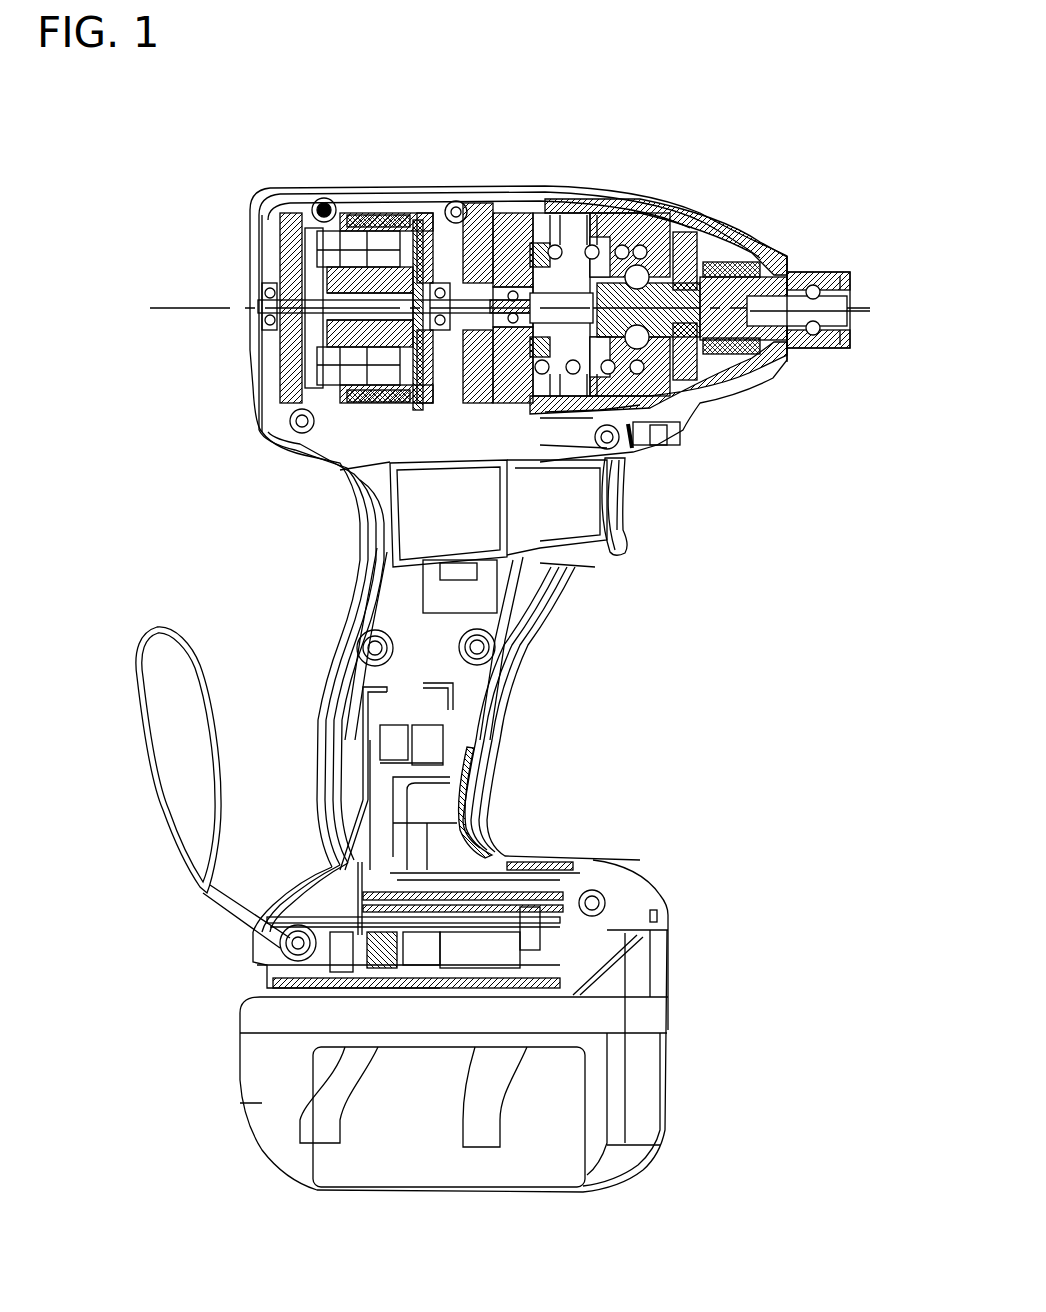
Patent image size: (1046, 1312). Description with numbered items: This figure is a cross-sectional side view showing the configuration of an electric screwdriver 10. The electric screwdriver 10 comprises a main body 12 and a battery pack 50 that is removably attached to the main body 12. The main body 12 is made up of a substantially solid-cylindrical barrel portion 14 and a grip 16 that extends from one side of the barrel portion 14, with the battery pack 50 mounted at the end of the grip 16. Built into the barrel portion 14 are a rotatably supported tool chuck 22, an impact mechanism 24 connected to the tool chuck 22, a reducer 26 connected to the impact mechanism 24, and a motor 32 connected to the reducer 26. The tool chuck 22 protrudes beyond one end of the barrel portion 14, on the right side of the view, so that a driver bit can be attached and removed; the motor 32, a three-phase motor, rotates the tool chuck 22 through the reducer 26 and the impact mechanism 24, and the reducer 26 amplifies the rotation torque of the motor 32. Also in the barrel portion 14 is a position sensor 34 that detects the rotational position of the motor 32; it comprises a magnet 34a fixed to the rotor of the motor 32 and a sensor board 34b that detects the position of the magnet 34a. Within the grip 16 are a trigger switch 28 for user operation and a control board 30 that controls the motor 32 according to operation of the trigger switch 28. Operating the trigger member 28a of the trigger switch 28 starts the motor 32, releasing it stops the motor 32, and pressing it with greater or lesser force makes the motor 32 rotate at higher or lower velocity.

The electric screwdriver 10 is at (735, 97).
The main body 12 is at (208, 240).
The barrel portion 14 is at (250, 333).
The grip 16 is at (330, 627).
The tool chuck 22 is at (858, 333).
The impact mechanism 24 is at (700, 403).
The reducer 26 is at (657, 445).
The trigger switch 28 is at (460, 523).
The trigger member 28a is at (628, 550).
The control board 30 is at (540, 862).
The motor 32 is at (335, 265).
The position sensor 34 is at (450, 118).
The magnet 34a is at (420, 215).
The sensor board 34b is at (397, 213).
The battery pack 50 is at (643, 1082).